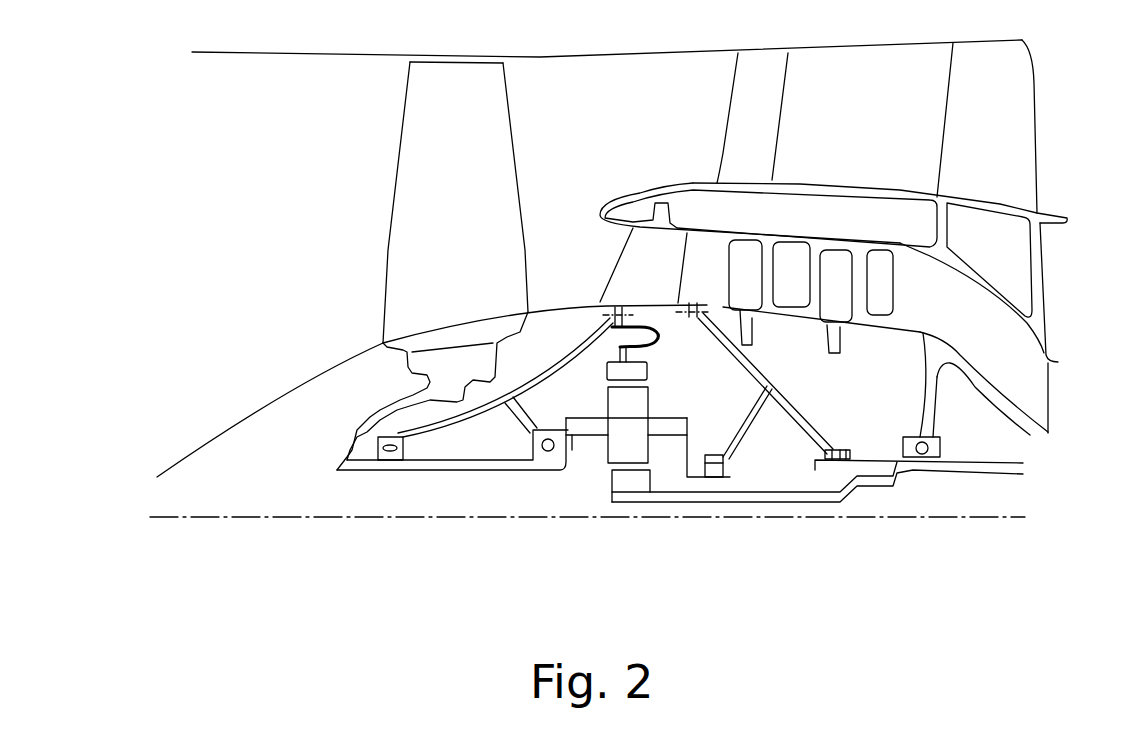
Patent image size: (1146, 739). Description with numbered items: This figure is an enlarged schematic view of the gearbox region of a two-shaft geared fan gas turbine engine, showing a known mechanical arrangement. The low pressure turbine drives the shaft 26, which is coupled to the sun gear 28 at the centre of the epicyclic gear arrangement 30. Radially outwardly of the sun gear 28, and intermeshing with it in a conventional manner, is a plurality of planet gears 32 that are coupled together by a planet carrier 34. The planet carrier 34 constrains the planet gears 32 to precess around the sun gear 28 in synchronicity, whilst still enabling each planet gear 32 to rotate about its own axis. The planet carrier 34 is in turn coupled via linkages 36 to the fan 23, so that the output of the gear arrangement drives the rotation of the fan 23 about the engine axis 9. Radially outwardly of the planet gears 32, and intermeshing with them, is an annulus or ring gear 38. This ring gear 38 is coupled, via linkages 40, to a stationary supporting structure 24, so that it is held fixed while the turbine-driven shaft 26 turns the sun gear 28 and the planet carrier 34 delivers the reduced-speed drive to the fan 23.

The engine axis 9 is at (370, 518).
The fan 23 is at (415, 205).
The stationary supporting structure 24 is at (636, 262).
The shaft 26 is at (798, 502).
The sun gear 28 is at (630, 480).
The epicyclic gear arrangement 30 is at (573, 493).
The planet gears 32 is at (612, 447).
The planet carrier 34 is at (693, 470).
The linkages 36 is at (577, 450).
The ring gear 38 is at (607, 373).
The linkages 40 is at (657, 337).